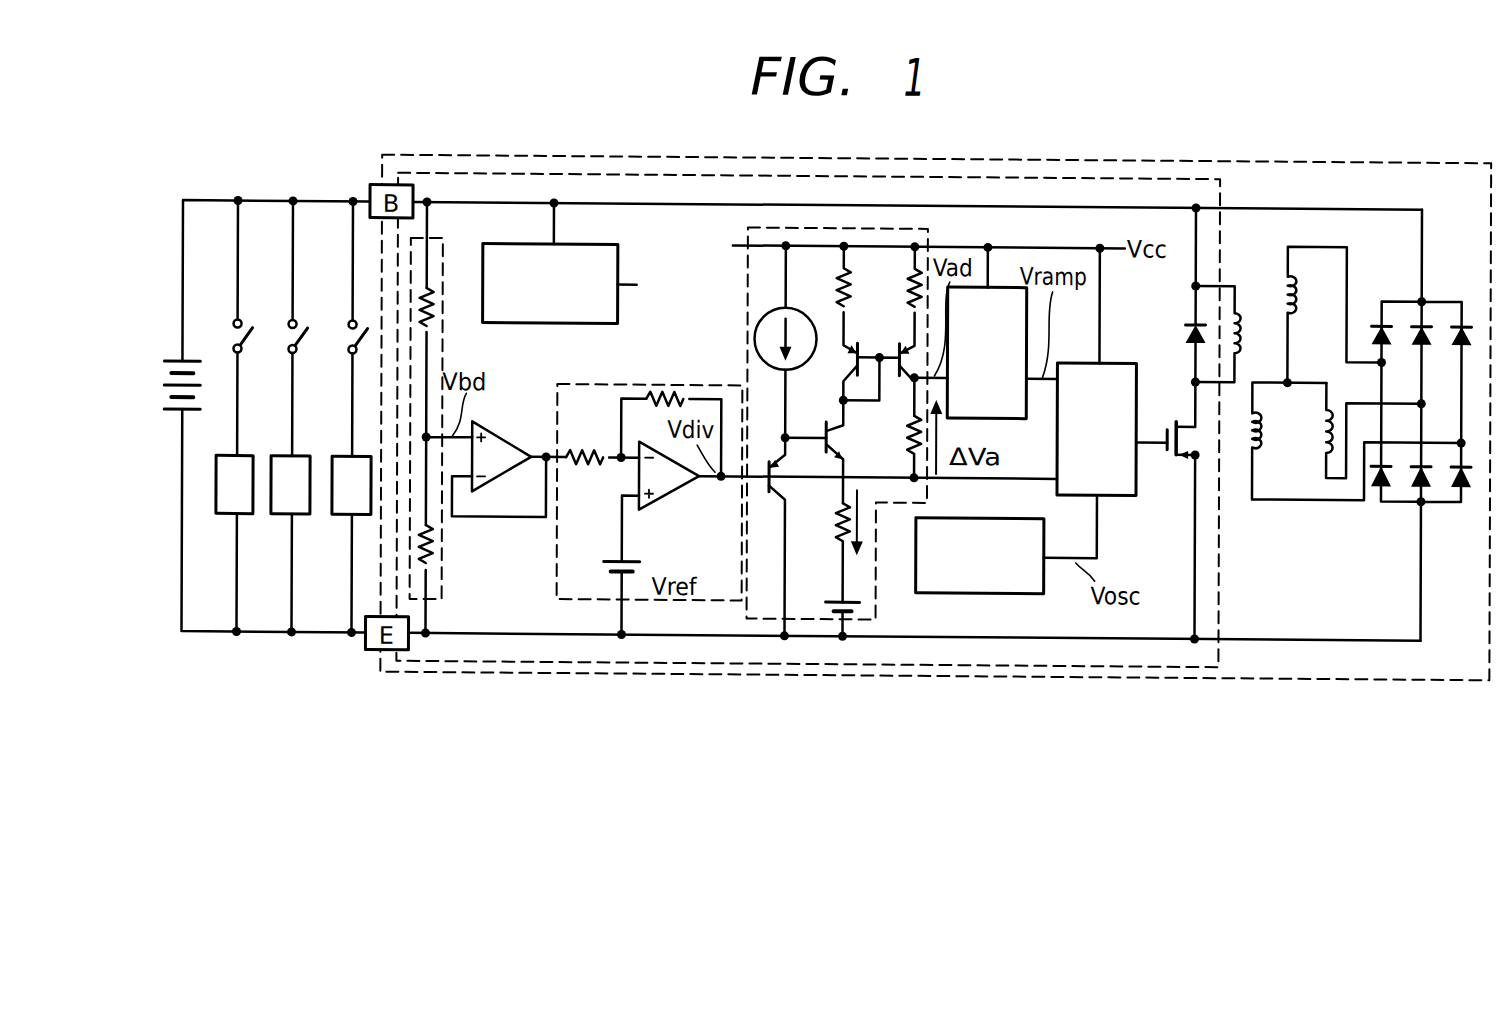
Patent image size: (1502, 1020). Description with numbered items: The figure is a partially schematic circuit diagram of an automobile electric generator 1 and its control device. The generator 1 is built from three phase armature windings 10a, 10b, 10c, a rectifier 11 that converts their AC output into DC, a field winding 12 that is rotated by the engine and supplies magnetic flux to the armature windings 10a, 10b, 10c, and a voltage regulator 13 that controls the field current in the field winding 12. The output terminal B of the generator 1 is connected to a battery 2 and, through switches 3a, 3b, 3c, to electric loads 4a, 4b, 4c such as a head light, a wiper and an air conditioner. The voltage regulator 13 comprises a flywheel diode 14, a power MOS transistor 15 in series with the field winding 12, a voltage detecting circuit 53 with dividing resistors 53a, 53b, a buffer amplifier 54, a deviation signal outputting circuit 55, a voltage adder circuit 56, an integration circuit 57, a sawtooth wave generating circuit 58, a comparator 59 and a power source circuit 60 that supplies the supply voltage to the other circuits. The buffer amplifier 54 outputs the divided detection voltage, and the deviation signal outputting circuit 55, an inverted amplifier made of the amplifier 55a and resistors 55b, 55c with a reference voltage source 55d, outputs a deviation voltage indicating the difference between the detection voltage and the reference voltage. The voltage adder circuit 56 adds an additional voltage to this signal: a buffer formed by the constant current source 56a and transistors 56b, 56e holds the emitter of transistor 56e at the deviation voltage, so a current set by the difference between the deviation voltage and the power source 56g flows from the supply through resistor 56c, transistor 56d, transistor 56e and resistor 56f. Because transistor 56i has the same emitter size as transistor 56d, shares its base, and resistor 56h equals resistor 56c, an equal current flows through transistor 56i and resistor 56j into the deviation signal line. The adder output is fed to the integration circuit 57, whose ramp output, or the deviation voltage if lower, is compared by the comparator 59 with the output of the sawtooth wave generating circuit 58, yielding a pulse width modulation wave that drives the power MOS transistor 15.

The electric generator 1 is at (422, 673).
The battery 2 is at (176, 432).
The switch 3a is at (234, 358).
The switch 3b is at (289, 358).
The switch 3c is at (349, 358).
The electric load 4a is at (222, 516).
The electric load 4b is at (278, 516).
The electric load 4c is at (340, 516).
The armature winding 10a is at (1293, 300).
The armature winding 10b is at (1263, 427).
The armature winding 10c is at (1320, 440).
The rectifier 11 is at (1406, 506).
The field winding 12 is at (1237, 290).
The voltage regulator 13 is at (1220, 614).
The flywheel diode 14 is at (1184, 335).
The power MOS transistor 15 is at (1182, 457).
The voltage detecting circuit 53 is at (458, 418).
The resistor 53a is at (432, 290).
The resistor 53b is at (440, 541).
The buffer amplifier 54 is at (500, 431).
The deviation signal outputting circuit 55 is at (624, 483).
The amplifier 55a is at (670, 497).
The resistor 55b is at (592, 452).
The resistor 55c is at (673, 392).
The reference voltage source 55d is at (633, 562).
The voltage adder circuit 56 is at (745, 258).
The constant current source 56a is at (802, 307).
The transistor 56b is at (775, 498).
The resistor 56c is at (850, 300).
The transistor 56d is at (850, 352).
The transistor 56e is at (836, 462).
The resistor 56f is at (837, 534).
The power source 56g is at (858, 594).
The resistor 56h is at (910, 298).
The transistor 56i is at (912, 388).
The resistor 56j is at (903, 437).
The integration circuit 57 is at (1002, 418).
The sawtooth wave generating circuit 58 is at (1002, 594).
The comparator 59 is at (1117, 357).
The power source circuit 60 is at (620, 265).